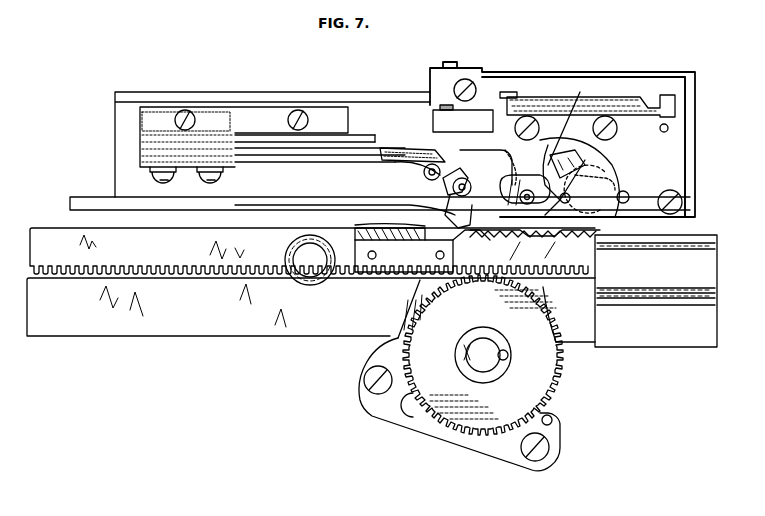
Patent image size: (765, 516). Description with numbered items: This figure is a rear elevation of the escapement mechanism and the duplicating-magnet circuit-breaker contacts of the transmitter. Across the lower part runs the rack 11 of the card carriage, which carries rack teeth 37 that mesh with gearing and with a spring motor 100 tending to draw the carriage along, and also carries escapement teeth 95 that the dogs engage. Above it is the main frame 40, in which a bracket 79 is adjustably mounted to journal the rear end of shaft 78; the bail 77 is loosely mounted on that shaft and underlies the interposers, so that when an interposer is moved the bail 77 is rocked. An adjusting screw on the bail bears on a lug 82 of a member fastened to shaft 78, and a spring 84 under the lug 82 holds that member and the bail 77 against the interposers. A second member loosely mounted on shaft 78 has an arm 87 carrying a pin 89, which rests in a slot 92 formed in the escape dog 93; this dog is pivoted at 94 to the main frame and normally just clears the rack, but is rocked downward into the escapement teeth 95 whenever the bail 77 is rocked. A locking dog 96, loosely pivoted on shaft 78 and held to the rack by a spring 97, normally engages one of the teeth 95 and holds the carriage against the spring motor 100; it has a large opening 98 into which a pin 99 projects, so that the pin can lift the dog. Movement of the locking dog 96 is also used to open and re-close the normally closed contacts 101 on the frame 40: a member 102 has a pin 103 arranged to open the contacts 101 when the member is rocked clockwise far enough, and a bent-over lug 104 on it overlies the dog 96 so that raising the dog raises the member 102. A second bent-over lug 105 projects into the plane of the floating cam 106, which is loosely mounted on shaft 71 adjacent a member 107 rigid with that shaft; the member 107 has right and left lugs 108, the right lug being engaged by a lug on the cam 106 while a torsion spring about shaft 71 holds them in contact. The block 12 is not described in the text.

The rack 11 is at (576, 262).
The mounting block 12 is at (400, 236).
The rack teeth 37 is at (177, 270).
The main frame 40 is at (356, 118).
The shaft 71 is at (400, 212).
The bail 77 is at (588, 162).
The shaft 78 is at (520, 242).
The bracket 79 is at (578, 88).
The lug 82 is at (597, 183).
The spring 84 is at (555, 150).
The arm 87 is at (590, 160).
The pin 89 is at (571, 200).
The slot 92 is at (522, 251).
The escape dog 93 is at (546, 251).
The pivot 94 is at (630, 196).
The escapement teeth 95 is at (471, 248).
The locking dog 96 is at (355, 223).
The spring 97 is at (518, 172).
The opening 98 is at (464, 203).
The pin 99 is at (525, 178).
The spring motor 100 is at (468, 420).
The contacts 101 is at (388, 180).
The member 102 is at (458, 170).
The pin 103 is at (428, 178).
The bent-over lug 104 is at (505, 158).
The bent-over lug 105 is at (455, 155).
The floating cam 106 is at (444, 181).
The member 107 is at (428, 240).
The lugs 108 is at (440, 200).